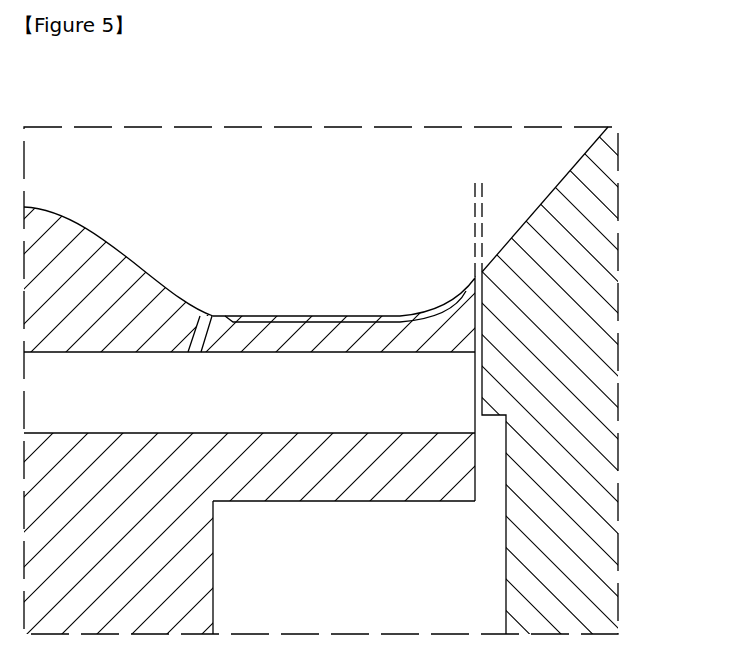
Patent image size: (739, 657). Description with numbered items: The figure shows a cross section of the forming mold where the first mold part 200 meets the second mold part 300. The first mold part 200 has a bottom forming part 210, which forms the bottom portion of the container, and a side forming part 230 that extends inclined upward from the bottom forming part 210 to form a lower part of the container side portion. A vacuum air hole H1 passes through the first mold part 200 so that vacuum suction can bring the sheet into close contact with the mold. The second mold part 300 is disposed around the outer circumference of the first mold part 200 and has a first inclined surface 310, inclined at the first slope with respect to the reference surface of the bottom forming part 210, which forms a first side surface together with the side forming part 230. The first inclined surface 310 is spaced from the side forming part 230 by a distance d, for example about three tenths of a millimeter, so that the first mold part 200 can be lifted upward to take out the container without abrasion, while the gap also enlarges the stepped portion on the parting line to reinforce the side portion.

The first mold part 200 is at (318, 343).
The bottom forming part 210 is at (365, 316).
The side forming part 230 is at (462, 290).
The vacuum air hole H1 is at (185, 333).
The second mold part 300 is at (563, 342).
The first inclined surface 310 is at (547, 198).
The distance d is at (510, 186).